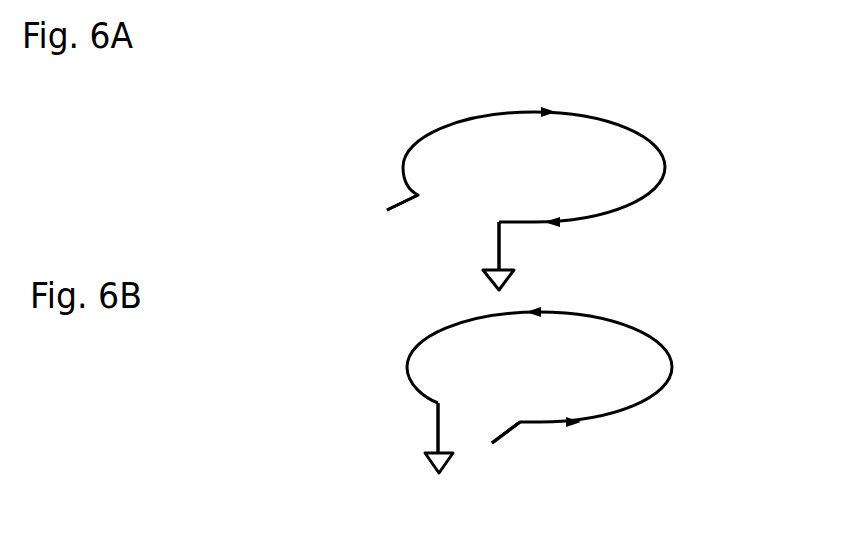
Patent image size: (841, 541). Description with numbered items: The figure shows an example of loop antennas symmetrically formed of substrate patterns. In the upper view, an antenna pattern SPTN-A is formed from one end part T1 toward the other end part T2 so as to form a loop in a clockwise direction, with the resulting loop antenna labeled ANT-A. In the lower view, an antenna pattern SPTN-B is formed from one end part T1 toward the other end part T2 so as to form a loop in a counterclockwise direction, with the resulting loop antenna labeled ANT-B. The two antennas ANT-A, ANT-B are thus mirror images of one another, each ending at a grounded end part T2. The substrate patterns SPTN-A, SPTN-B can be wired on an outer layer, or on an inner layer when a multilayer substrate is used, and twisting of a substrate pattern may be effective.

In FIG. 6A, the antenna pattern SPTN-A is at (419, 181).
In FIG. 6A, the antenna A ANT-A is at (692, 97).
In FIG. 6A, the one end part T1 is at (383, 216).
In FIG. 6B, the one end part T1 is at (492, 449).
In FIG. 6A, the other end part T2 is at (513, 259).
In FIG. 6B, the other end part T2 is at (421, 445).
In FIG. 6B, the antenna pattern SPTN-B is at (414, 388).
In FIG. 6B, the antenna B ANT-B is at (690, 292).